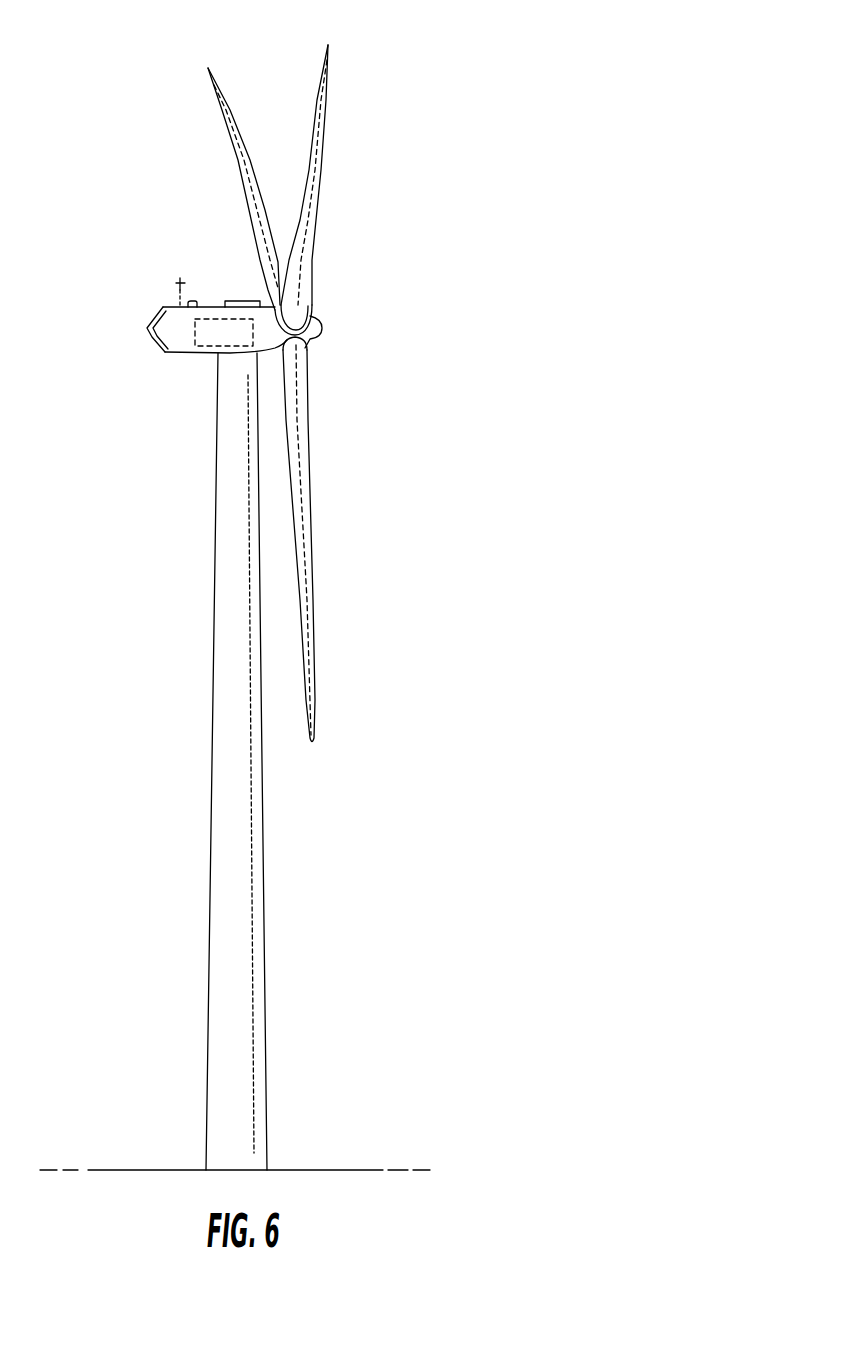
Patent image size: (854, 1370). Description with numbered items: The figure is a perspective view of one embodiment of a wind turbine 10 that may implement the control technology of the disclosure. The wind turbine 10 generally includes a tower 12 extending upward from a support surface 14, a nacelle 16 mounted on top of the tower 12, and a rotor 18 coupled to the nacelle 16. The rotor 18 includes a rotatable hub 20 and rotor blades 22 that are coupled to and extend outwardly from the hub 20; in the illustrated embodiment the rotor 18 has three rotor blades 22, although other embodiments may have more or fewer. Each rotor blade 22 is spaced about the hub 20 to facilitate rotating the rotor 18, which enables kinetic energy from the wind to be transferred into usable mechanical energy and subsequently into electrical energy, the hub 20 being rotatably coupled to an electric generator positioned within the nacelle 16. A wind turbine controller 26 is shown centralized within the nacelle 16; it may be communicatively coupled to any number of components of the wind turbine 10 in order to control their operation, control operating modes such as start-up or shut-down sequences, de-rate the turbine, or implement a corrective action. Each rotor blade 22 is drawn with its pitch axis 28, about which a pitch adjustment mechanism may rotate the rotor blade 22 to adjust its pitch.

The wind turbine 10 is at (440, 222).
The tower 12 is at (240, 885).
The support surface 14 is at (176, 1170).
The nacelle 16 is at (185, 350).
The rotor 18 is at (325, 310).
The hub 20 is at (322, 327).
The rotor blade 22 is at (230, 127).
The wind turbine controller 26 is at (211, 319).
The pitch axis 28 is at (245, 202).